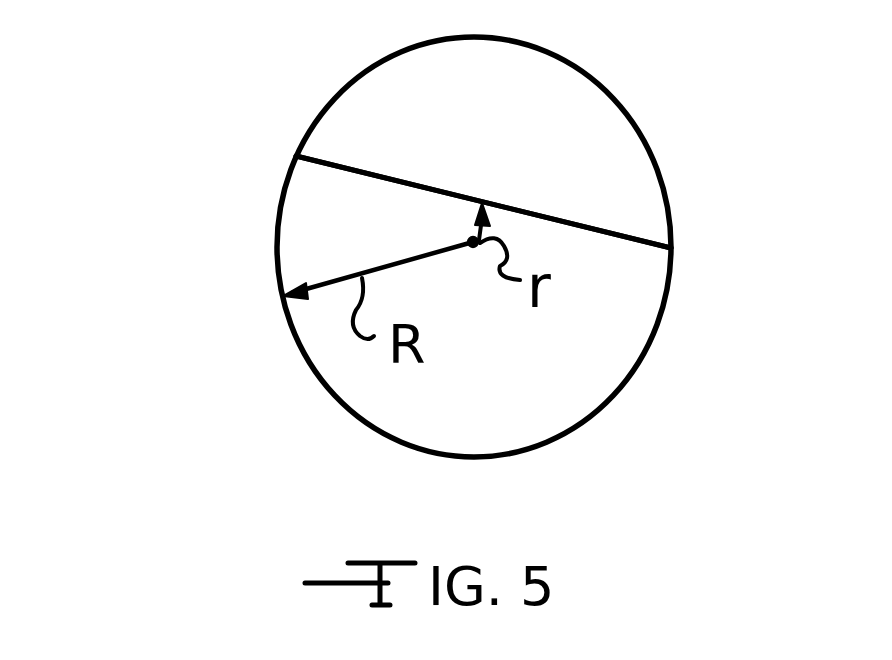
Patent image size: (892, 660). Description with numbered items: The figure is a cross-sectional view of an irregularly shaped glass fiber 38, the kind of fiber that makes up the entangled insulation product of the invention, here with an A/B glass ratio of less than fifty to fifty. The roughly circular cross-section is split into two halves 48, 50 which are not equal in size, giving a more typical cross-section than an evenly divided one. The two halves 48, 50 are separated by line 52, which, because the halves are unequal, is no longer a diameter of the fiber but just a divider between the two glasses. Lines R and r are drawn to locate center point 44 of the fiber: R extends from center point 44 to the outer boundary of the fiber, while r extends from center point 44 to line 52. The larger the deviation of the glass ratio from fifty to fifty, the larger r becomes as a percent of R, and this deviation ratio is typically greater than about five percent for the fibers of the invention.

The irregularly shaped glass fiber 38 is at (272, 252).
The center point 44 is at (466, 239).
The half 48 is at (492, 134).
The half 50 is at (534, 394).
The line 52 is at (623, 237).